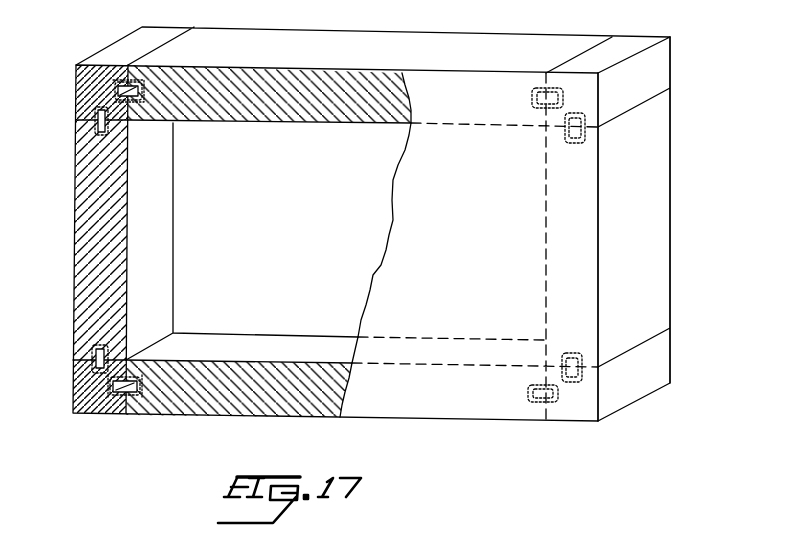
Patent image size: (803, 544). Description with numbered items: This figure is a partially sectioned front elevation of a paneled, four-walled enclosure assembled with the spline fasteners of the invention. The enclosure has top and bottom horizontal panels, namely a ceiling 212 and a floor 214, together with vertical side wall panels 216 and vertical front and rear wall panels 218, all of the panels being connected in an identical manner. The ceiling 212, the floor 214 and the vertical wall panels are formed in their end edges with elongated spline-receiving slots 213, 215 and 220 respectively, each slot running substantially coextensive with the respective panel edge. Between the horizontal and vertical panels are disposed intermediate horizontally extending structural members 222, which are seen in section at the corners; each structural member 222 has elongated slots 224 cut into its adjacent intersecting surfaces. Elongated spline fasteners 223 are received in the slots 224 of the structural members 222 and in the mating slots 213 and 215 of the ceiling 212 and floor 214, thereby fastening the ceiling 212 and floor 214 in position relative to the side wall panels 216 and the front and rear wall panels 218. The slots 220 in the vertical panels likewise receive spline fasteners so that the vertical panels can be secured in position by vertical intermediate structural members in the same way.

The ceiling 212 is at (293, 105).
The spline-receiving slot 213 is at (131, 102).
The floor 214 is at (300, 400).
The spline-receiving slot 215 is at (142, 388).
The vertical side wall panel 216 is at (90, 296).
The vertical front and rear wall panel 218 is at (274, 218).
The spline-receiving slot 220 is at (92, 353).
The intermediate horizontally extending structural member 222 is at (76, 80).
The elongated spline fastener 223 is at (143, 91).
The elongated slot 224 is at (110, 387).